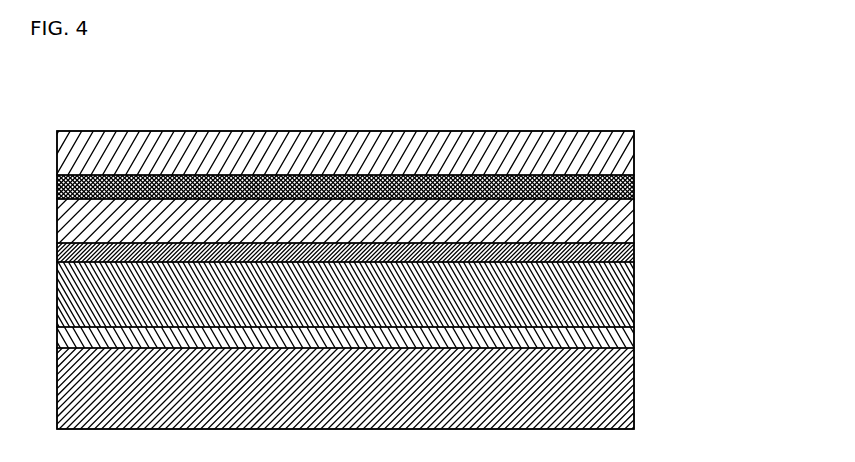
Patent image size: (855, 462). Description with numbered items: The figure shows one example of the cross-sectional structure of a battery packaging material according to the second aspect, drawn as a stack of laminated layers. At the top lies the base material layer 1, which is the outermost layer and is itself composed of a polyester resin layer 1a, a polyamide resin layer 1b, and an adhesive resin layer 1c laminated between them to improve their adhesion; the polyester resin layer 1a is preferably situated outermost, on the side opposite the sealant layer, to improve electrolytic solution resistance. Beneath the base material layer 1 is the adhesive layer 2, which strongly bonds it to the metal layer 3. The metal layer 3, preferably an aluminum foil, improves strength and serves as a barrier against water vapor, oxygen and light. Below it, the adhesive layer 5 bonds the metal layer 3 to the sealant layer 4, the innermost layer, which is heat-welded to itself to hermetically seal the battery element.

The base material layer 1 is at (396, 231).
The polyester resin layer 1a is at (634, 150).
The polyamide resin layer 1b is at (751, 93).
The adhesive resin layer 1c is at (634, 187).
The adhesive layer 2 is at (634, 250).
The metal layer 3 is at (634, 303).
The sealant layer 4 is at (634, 383).
The adhesive layer 5 is at (634, 340).